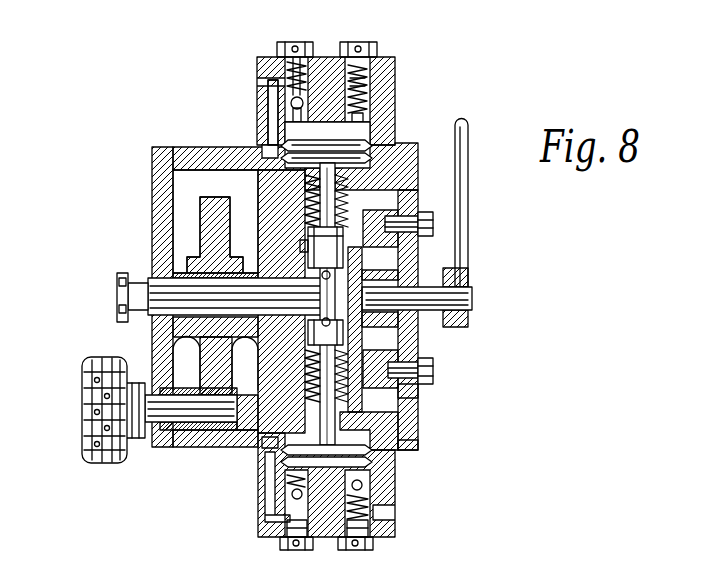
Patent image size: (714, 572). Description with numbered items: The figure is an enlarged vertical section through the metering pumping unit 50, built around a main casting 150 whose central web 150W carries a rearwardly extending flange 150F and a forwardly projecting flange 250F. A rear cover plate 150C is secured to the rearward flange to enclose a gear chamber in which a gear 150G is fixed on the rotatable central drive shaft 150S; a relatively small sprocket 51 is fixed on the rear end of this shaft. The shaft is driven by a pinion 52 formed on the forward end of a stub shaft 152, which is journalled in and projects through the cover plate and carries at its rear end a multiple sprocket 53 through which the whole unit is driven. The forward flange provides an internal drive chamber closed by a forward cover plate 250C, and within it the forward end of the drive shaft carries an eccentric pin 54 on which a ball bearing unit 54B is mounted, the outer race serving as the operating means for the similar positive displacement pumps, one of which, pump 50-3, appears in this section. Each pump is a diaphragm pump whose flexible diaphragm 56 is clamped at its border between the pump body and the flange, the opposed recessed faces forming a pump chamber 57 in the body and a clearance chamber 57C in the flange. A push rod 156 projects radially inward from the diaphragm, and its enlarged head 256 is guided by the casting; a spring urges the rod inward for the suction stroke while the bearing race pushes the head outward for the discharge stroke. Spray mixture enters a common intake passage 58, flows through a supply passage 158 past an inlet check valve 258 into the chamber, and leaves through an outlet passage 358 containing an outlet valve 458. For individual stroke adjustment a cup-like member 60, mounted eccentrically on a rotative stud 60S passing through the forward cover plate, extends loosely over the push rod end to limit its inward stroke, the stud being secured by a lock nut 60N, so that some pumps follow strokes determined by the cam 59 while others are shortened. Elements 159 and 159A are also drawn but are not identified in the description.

The pumping unit 50 is at (422, 85).
The positive displacement pump 50-3 is at (400, 490).
The sprocket 51 is at (117, 283).
The pinion 52 is at (200, 430).
The multiple sprocket 53 is at (100, 363).
The eccentric pin 54 is at (323, 300).
The ball bearing unit 54B is at (317, 247).
The flexible diaphragm 56 is at (292, 148).
The pump chamber 57 is at (360, 132).
The clearance chamber 57C is at (417, 162).
The common intake passage 58 is at (263, 150).
The cam 59 is at (400, 355).
The cup-like member 60 is at (420, 348).
The lock nut 60N is at (433, 390).
The rotative stud 60S is at (422, 402).
The main casting 150 is at (230, 447).
The cover plate 150C is at (150, 160).
The flange 150F is at (189, 147).
The gear 150G is at (205, 207).
The central drive shaft 150S is at (145, 283).
The central web 150W is at (262, 180).
The stub shaft 152 is at (157, 450).
The push rod 156 is at (345, 197).
The supply passage 158 is at (272, 80).
The shaft 159 is at (472, 297).
The disc 159A is at (468, 245).
The forward cover plate 250C is at (420, 185).
The forwardly projecting flange 250F is at (418, 428).
The enlarged head 256 is at (310, 230).
The inlet check valve 258 is at (298, 57).
The outlet passage 358 is at (393, 82).
The outlet valve 458 is at (356, 106).